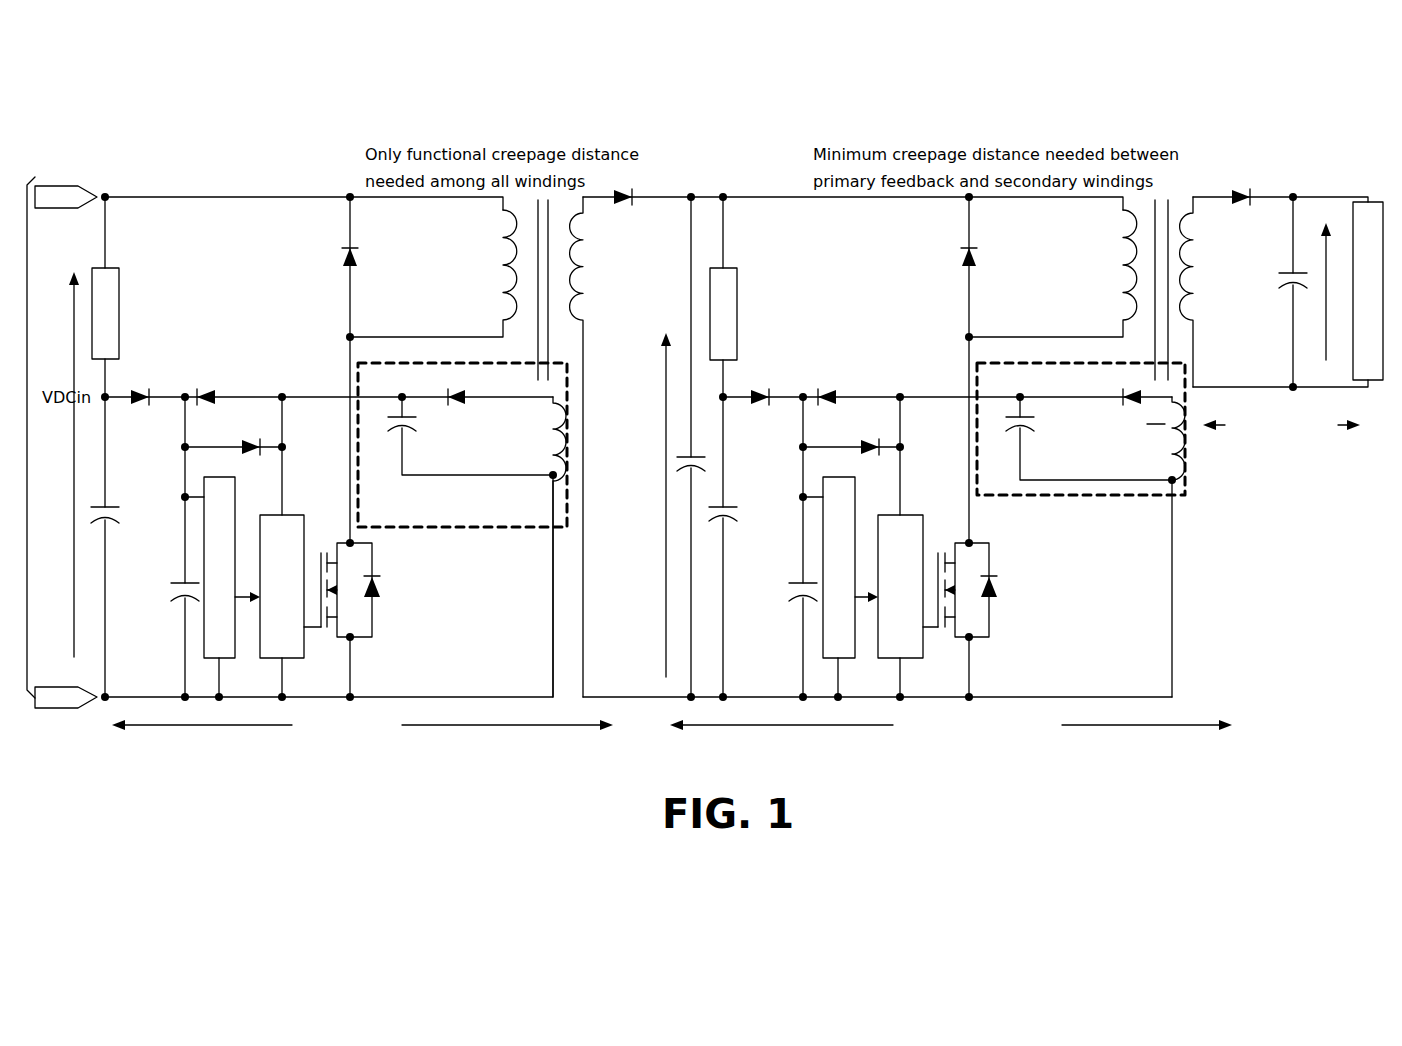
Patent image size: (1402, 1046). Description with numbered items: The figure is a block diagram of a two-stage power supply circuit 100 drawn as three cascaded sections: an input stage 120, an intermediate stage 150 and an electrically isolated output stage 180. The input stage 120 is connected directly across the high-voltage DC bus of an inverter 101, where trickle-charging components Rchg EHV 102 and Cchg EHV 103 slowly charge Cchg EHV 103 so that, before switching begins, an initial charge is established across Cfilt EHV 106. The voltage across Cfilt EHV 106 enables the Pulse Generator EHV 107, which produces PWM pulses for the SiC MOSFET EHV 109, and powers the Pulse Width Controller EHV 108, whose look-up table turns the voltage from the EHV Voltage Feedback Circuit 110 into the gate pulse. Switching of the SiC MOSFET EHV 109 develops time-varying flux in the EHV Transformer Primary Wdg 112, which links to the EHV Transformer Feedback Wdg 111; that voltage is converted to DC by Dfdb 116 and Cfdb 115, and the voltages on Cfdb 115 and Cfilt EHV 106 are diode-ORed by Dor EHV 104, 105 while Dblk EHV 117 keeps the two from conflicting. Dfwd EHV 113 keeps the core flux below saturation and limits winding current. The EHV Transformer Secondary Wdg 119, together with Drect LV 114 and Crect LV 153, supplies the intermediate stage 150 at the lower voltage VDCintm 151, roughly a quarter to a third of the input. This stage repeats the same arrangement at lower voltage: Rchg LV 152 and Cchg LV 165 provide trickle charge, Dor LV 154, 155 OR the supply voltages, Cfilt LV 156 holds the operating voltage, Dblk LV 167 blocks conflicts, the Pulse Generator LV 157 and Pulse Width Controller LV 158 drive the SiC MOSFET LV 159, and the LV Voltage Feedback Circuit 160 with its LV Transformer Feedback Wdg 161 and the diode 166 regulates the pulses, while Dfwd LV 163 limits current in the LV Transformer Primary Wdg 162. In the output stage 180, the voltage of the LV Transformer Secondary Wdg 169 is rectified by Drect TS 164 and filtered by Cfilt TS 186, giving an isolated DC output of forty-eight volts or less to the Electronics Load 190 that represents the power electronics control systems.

The power supply circuit 100 is at (114, 161).
The inverter 101 is at (54, 442).
The Rchg EHV 102 is at (119, 303).
The Cchg EHV 103 is at (92, 628).
The Dor EHV1 104 is at (143, 428).
The Dor EHV2 105 is at (224, 398).
The Cfilt EHV 106 is at (148, 668).
The Pulse Generator EHV 107 is at (215, 660).
The Pulse Width Controller EHV 108 is at (268, 660).
The SiC MOSFET EHV 109 is at (410, 612).
The EHV Voltage Feedback Circuit 110 is at (462, 513).
The EHV Transformer Feedback Wdg 111 is at (555, 457).
The EHV Transformer Primary Wdg 112 is at (406, 233).
The Dfwd EHV 113 is at (272, 262).
The Drect LV 114 is at (627, 188).
The Cfdb 115 is at (382, 462).
The Dfdb 116 is at (478, 398).
The Dblk EHV 117 is at (279, 470).
The EHV Transformer Secondary Wdg 119 is at (598, 333).
The input stage 120 is at (362, 742).
The intermediate stage 150 is at (951, 742).
The VDCintm 151 is at (657, 405).
The Rchg LV 152 is at (737, 306).
The Crect LV 153 is at (667, 525).
The Dor LV1 154 is at (755, 437).
The Dor LV2 155 is at (855, 398).
The Cfilt LV 156 is at (805, 648).
The Pulse Generator LV 157 is at (846, 660).
The Pulse Width Controller LV 158 is at (893, 660).
The SiC MOSFET LV 159 is at (1030, 625).
The LV Voltage Feedback Circuit 160 is at (1180, 497).
The LV Transformer Feedback Wdg 161 is at (1180, 458).
The LV Transformer Primary Wdg 162 is at (1065, 238).
The Dfwd LV 163 is at (923, 245).
The Drect TS 164 is at (1252, 168).
The Cchg LV 165 is at (707, 612).
The Dfwd LV 166 is at (1165, 424).
The Dblk LV 167 is at (895, 470).
The LV Transformer Secondary Wdg 169 is at (1213, 310).
The output stage 180 is at (1281, 437).
The Cfilt TS 186 is at (1296, 345).
The Electronics Load 190 is at (1370, 202).